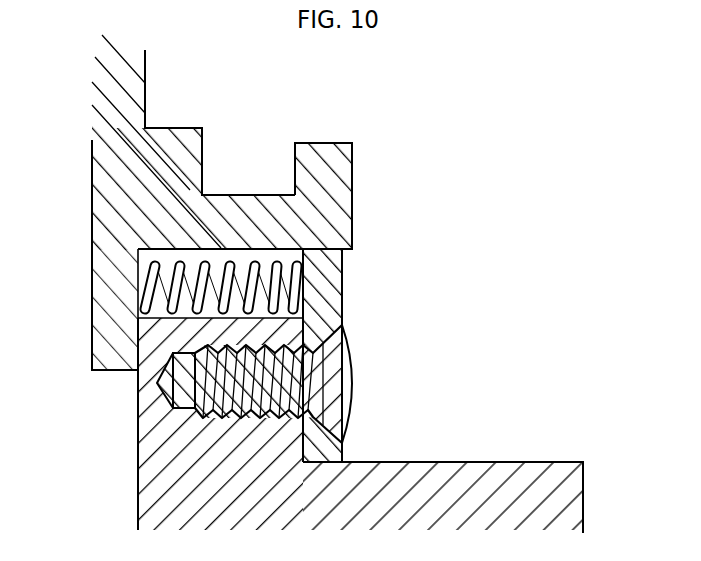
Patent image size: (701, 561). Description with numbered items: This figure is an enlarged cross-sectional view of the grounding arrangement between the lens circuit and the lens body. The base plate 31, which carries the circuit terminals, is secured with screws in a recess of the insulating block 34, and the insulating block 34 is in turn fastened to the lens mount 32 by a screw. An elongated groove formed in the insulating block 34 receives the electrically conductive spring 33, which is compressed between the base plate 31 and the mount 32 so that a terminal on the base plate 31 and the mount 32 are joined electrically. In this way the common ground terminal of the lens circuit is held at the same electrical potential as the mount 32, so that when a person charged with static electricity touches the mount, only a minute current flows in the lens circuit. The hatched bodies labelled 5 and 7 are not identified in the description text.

The housing body 5 is at (147, 83).
The housing projection 7 is at (337, 152).
The base plate 31 is at (333, 273).
The lens mount 32 is at (102, 317).
The electrically conductive spring 33 is at (165, 283).
The insulating block 34 is at (152, 452).